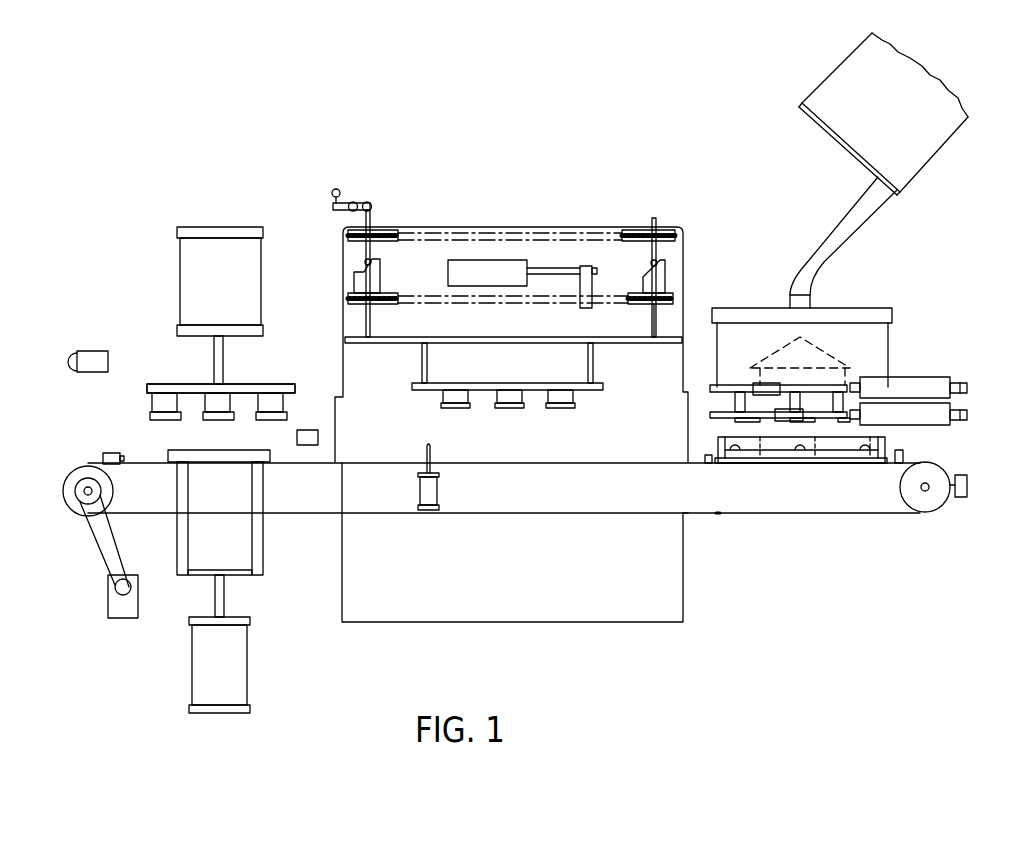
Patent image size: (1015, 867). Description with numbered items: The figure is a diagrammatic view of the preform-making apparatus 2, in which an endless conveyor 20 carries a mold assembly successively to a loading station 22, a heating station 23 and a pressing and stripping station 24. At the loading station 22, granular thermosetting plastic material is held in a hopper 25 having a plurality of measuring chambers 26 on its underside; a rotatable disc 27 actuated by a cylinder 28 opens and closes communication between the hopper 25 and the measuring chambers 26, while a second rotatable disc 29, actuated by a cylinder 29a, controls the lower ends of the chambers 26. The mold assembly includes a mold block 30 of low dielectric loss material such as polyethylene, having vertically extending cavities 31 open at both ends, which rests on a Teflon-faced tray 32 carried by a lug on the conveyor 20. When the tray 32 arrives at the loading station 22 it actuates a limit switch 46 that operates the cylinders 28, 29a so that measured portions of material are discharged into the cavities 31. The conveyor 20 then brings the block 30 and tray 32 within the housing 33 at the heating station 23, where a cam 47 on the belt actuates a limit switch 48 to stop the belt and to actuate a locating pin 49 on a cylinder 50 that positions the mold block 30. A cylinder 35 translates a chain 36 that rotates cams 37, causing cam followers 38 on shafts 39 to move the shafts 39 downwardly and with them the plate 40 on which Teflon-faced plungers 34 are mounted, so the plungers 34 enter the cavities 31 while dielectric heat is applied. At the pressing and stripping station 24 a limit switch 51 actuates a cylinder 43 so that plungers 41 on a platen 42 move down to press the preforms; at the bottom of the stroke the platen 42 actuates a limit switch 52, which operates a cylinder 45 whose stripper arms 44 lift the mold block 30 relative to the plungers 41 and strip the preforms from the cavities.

The packaging machine 2 is at (905, 447).
The endless conveyor 20 is at (303, 509).
The loading station 22 is at (924, 312).
The heating station 23 is at (699, 294).
The pressing and stripping station 24 is at (145, 309).
The hopper 25 is at (878, 318).
The measuring chambers 26 is at (848, 392).
The rotatable disc 27 is at (706, 388).
The cylinder 28 is at (937, 388).
The second rotatable disc 29 is at (706, 418).
The cylinder 29a is at (930, 417).
The mold block 30 is at (710, 447).
The cavities 31 is at (757, 470).
The tray 32 is at (805, 463).
The housing 33 is at (342, 292).
The plungers 34 is at (510, 409).
The cylinder 35 is at (498, 283).
The chain 36 is at (646, 298).
The cams 37 is at (660, 282).
The cam followers 38 is at (650, 263).
The shafts 39 is at (651, 318).
The plate 40 is at (500, 383).
The plungers 41 is at (160, 403).
The platen 42 is at (197, 386).
The cylinder 43 is at (180, 256).
The stripper arms 44 is at (170, 451).
The cylinder 45 is at (93, 350).
The limit switch 46 is at (897, 464).
The cam 47 is at (718, 513).
The limit switch 48 is at (963, 498).
The locating pin 49 is at (421, 452).
The cylinder 50 is at (418, 492).
The limit switch 51 is at (103, 457).
The limit switch 52 is at (308, 430).